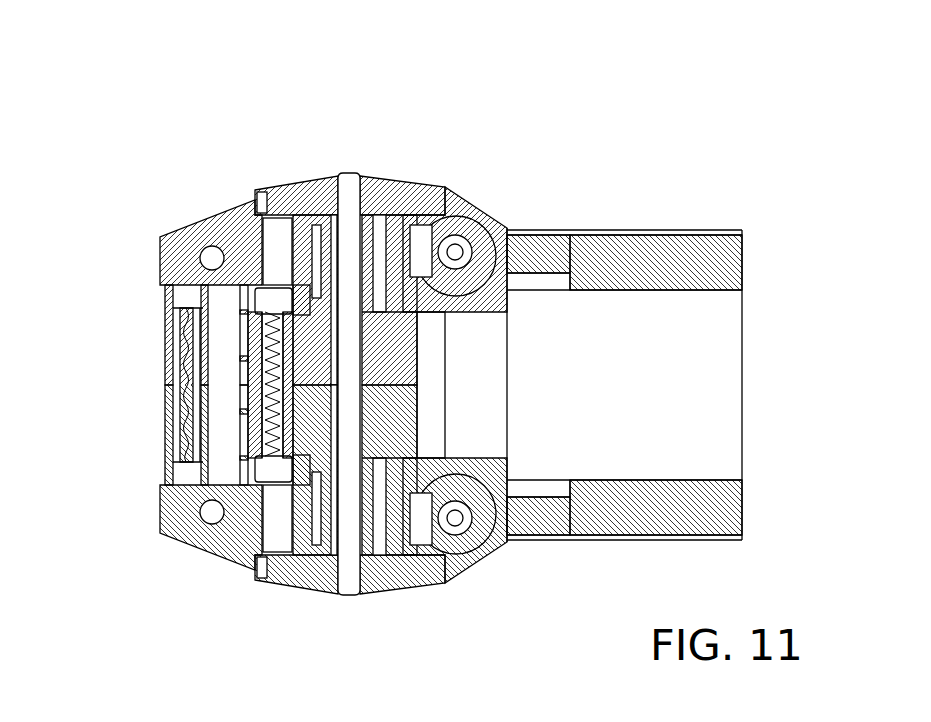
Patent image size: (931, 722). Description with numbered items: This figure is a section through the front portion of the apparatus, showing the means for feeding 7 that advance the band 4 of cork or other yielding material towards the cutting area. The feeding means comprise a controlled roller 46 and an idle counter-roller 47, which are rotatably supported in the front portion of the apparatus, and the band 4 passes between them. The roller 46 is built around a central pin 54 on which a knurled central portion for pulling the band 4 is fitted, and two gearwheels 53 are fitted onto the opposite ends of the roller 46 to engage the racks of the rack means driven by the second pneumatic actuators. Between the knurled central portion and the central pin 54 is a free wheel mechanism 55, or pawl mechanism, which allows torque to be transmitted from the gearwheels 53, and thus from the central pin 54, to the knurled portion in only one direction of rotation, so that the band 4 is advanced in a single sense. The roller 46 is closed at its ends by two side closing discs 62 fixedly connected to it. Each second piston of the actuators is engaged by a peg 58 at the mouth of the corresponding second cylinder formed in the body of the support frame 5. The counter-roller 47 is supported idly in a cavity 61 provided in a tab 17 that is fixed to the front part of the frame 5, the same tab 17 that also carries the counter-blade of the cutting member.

The band 4 is at (268, 578).
The support frame 5 is at (640, 222).
The means for feeding 7 is at (232, 520).
The tab 17 is at (180, 232).
The controlled roller 46 is at (293, 171).
The idle counter-roller 47 is at (176, 398).
The gearwheels 53 is at (240, 203).
The central pin 54 is at (348, 173).
The free wheel mechanism 55 is at (513, 550).
The peg 58 is at (492, 186).
The cavity 61 is at (185, 289).
The side closing discs 62 is at (392, 181).